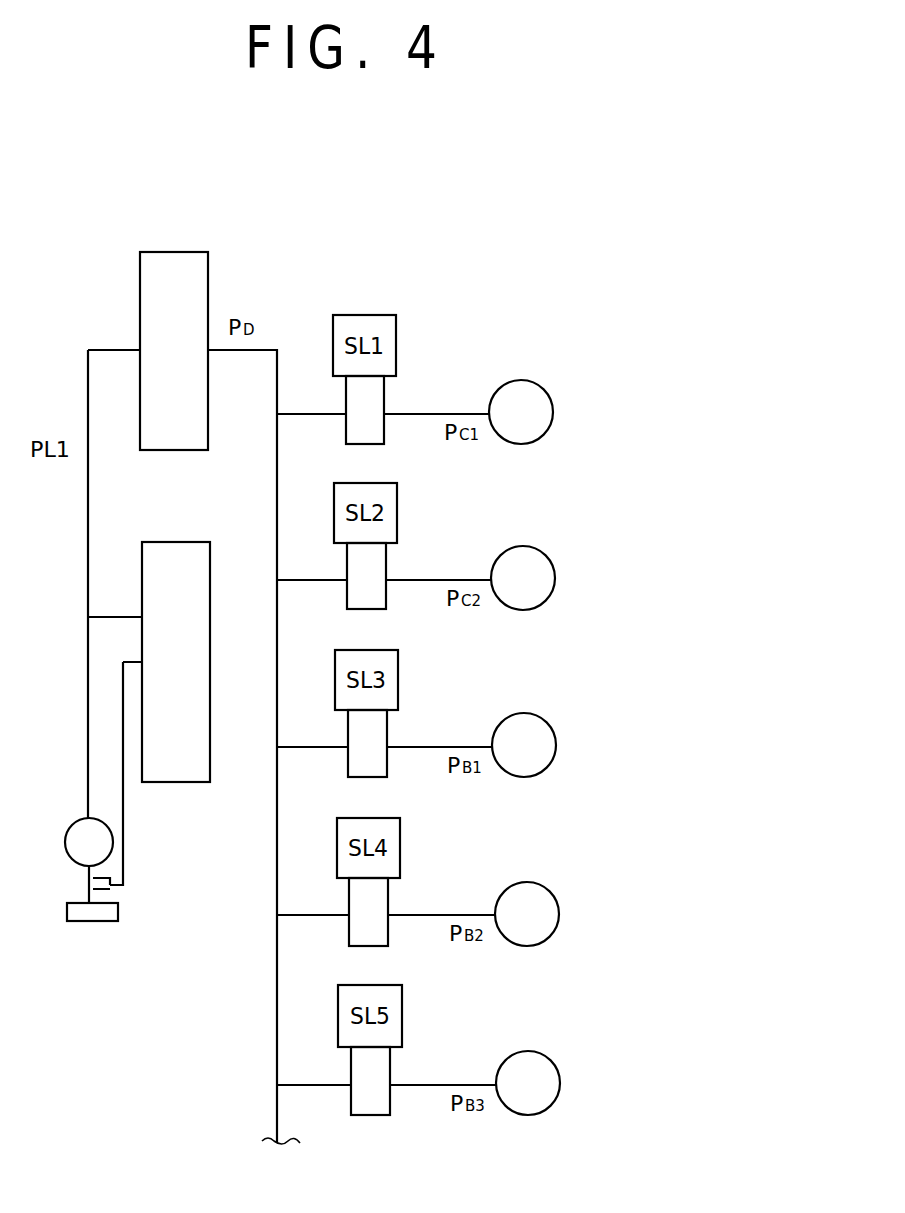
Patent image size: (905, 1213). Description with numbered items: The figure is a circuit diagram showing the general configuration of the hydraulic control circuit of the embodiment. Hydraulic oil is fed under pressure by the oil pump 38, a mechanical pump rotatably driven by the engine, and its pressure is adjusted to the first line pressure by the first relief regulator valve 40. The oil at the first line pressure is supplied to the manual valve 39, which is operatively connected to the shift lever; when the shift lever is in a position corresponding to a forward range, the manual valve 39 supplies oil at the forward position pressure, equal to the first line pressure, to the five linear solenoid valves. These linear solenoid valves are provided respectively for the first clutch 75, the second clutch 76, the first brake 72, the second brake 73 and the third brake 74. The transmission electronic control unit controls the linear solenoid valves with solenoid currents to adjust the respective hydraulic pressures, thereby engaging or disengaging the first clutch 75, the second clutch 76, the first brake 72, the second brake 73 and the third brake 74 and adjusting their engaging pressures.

The manual valve 39 is at (187, 252).
The first relief regulator valve 40 is at (190, 542).
The oil pump 38 is at (70, 830).
The C1 clutch 75 is at (536, 383).
The C2 clutch 76 is at (538, 552).
The B1 brake 72 is at (539, 719).
The B2 brake 73 is at (541, 887).
The B3 brake 74 is at (543, 1056).